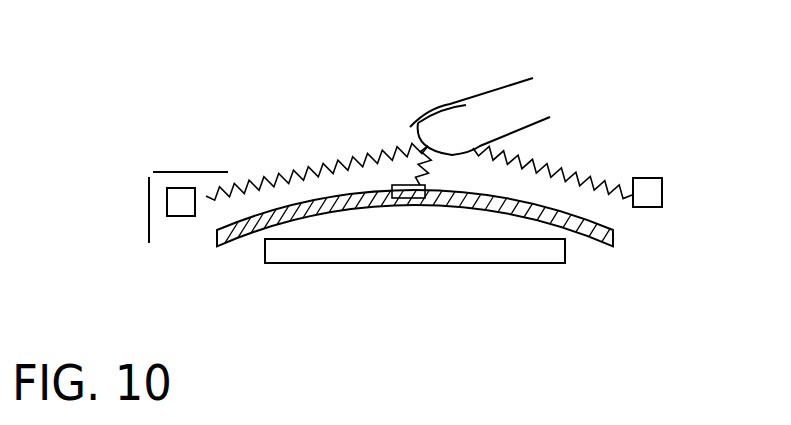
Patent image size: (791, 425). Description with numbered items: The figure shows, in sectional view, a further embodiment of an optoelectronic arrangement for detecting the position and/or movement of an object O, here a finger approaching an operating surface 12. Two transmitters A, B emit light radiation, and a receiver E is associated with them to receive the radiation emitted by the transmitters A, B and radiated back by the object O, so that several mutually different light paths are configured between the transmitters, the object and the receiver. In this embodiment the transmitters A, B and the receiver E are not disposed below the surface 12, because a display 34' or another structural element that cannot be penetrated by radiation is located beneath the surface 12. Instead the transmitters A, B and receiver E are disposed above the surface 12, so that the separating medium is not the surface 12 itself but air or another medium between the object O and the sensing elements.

The surface 12 is at (372, 193).
The receiver E is at (403, 204).
The display 34' is at (415, 288).
The transmitter A is at (179, 203).
The transmitter B is at (648, 193).
The object O is at (455, 122).